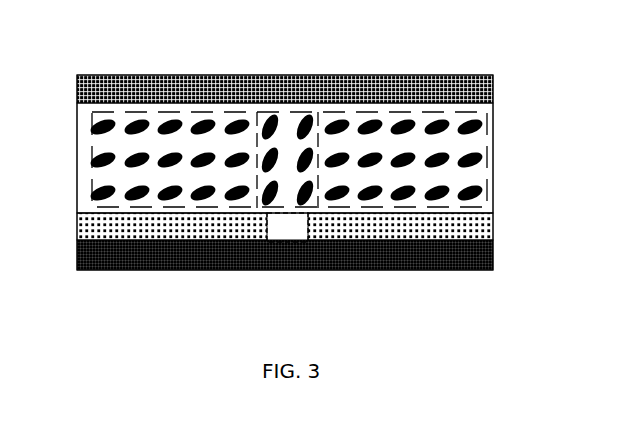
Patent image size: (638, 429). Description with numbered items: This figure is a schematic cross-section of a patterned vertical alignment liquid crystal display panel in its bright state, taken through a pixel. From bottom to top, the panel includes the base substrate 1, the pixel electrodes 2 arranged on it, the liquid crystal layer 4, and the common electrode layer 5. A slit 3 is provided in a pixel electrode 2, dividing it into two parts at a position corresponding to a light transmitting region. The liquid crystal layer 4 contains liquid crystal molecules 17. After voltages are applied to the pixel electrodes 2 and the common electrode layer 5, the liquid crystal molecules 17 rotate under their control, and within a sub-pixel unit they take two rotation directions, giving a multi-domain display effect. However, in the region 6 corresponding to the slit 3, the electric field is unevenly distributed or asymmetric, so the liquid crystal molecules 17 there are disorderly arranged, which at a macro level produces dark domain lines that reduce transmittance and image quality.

The base substrate 1 is at (493, 253).
The pixel electrode 2 is at (77, 226).
The slit 3 is at (288, 236).
The liquid crystal layer 4 is at (493, 163).
The common electrode layer 5 is at (493, 89).
The region corresponding to the slit 6 is at (307, 154).
The liquid crystal molecules 17 is at (487, 130).